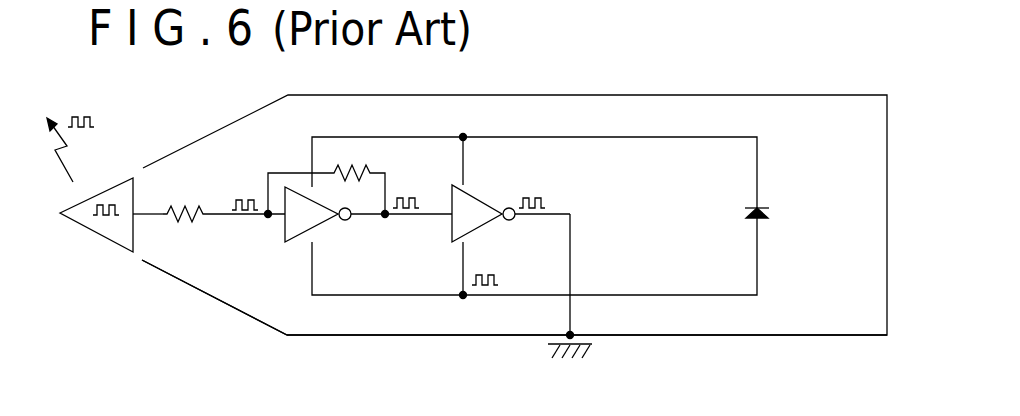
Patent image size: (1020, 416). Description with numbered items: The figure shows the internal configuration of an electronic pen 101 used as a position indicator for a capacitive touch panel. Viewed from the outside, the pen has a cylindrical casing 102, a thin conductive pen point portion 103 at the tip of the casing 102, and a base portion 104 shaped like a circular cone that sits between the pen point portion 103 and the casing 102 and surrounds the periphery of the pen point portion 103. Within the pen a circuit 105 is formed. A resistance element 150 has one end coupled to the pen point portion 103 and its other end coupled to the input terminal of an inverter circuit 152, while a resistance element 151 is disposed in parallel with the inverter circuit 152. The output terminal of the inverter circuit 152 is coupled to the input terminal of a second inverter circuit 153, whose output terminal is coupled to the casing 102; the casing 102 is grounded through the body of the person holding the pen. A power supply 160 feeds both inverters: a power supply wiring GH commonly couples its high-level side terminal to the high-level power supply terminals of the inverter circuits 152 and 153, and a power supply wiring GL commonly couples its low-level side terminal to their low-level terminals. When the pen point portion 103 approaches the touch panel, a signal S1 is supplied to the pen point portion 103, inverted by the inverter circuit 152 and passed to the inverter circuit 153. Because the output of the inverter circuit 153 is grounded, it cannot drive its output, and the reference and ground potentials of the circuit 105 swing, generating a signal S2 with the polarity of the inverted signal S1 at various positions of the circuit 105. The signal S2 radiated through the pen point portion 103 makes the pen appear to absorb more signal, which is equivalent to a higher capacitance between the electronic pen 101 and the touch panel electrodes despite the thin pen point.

The electronic pen 101 is at (884, 83).
The casing 102 is at (707, 338).
The pen point portion 103 is at (92, 241).
The base portion 104 is at (212, 298).
The circuit 105 is at (699, 108).
The resistance element 150 is at (182, 204).
The resistance element 151 is at (346, 165).
The inverter circuit 152 is at (315, 226).
The inverter circuit 153 is at (485, 226).
The power supply 160 is at (760, 207).
The signal S1 is at (110, 200).
The signal S2 is at (80, 112).
The power supply wiring GH is at (643, 140).
The power supply wiring GL is at (640, 292).